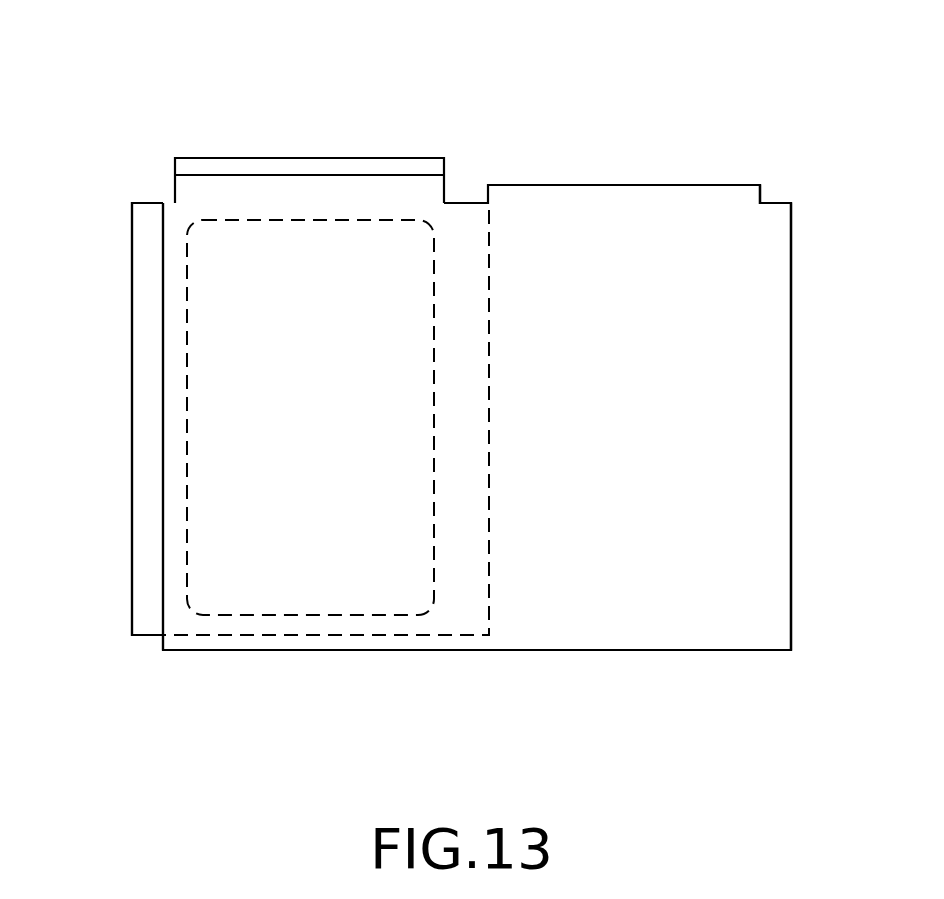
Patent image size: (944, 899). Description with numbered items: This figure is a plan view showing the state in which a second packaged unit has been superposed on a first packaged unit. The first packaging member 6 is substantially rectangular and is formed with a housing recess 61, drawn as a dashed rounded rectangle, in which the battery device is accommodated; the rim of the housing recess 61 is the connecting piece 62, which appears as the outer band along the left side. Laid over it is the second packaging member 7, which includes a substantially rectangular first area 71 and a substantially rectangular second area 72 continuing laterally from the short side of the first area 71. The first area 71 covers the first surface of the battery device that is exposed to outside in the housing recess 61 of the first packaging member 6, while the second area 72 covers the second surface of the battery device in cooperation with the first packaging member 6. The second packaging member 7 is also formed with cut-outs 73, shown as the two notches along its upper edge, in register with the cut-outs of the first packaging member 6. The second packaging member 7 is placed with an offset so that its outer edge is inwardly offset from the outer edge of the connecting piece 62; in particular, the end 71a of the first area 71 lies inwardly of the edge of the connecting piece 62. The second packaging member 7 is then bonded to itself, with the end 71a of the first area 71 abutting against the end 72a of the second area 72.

The first packaging member 6 is at (333, 133).
The second packaging member 7 is at (782, 130).
The housing recess 61 is at (210, 397).
The connecting piece 62 is at (148, 320).
The first area 71 is at (320, 627).
The end of first area 71a is at (160, 515).
The second area 72 is at (677, 628).
The end of second area 72a is at (791, 543).
The cut-out 73 is at (469, 193).